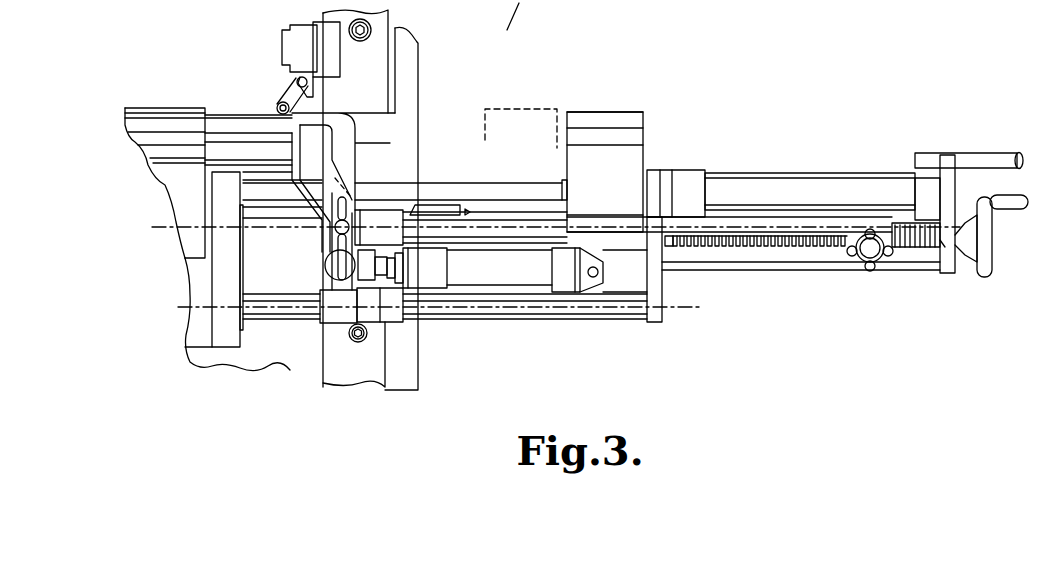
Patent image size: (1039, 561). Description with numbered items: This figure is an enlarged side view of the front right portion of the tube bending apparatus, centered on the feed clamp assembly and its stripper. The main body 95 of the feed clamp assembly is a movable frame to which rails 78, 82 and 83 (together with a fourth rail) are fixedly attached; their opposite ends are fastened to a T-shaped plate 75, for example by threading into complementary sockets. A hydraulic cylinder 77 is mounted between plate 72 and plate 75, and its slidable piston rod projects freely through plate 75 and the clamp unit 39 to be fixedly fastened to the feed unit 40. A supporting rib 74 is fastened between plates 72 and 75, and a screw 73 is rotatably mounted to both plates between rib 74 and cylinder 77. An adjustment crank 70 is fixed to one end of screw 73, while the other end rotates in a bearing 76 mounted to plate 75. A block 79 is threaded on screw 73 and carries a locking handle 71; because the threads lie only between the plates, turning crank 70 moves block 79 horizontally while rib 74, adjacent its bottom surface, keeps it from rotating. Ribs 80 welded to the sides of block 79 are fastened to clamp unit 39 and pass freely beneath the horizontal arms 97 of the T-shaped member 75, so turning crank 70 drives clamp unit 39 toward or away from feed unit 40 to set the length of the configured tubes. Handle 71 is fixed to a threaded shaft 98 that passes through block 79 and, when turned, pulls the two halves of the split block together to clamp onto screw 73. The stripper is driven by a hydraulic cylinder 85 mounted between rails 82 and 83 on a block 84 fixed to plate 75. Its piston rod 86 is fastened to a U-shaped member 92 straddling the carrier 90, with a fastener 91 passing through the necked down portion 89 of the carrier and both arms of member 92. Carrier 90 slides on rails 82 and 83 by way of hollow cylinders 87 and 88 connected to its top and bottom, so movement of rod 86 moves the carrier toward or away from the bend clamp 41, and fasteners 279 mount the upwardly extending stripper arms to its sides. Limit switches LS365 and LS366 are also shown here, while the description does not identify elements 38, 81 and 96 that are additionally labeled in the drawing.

The handle bar 38 is at (945, 160).
The clamp unit 39 is at (627, 112).
The feed unit 40 is at (380, 132).
The bend clamp 41 is at (160, 108).
The adjustment crank 70 is at (983, 277).
The locking handle 71 is at (860, 260).
The plate 72 is at (943, 272).
The screw 73 is at (908, 247).
The supporting rib 74 is at (800, 268).
The T-shaped plate 75 is at (655, 322).
The bearing 76 is at (667, 243).
The hydraulic cylinder 77 is at (742, 182).
The rail 78 is at (277, 185).
The block 79 is at (857, 260).
The ribs 80 is at (812, 225).
The end cap 81 is at (565, 180).
The rail 82 is at (280, 310).
The rail 83 is at (263, 235).
The block 84 is at (613, 283).
The hydraulic cylinder 85 is at (523, 280).
The slidable piston rod 86 is at (393, 267).
The hollow cylinder 87 is at (400, 313).
The hollow cylinder 88 is at (393, 218).
The necked down portion 89 is at (323, 280).
The carrier 90 is at (333, 317).
The fastener 91 is at (340, 273).
The U-shaped member 92 is at (362, 277).
The main body 95 is at (185, 245).
The pin 96 is at (938, 243).
The horizontal arms 97 is at (655, 180).
The threaded shaft 98 is at (873, 253).
The fasteners 279 is at (340, 230).
The limit switch LS365 is at (291, 45).
The limit switch LS366 is at (466, 212).